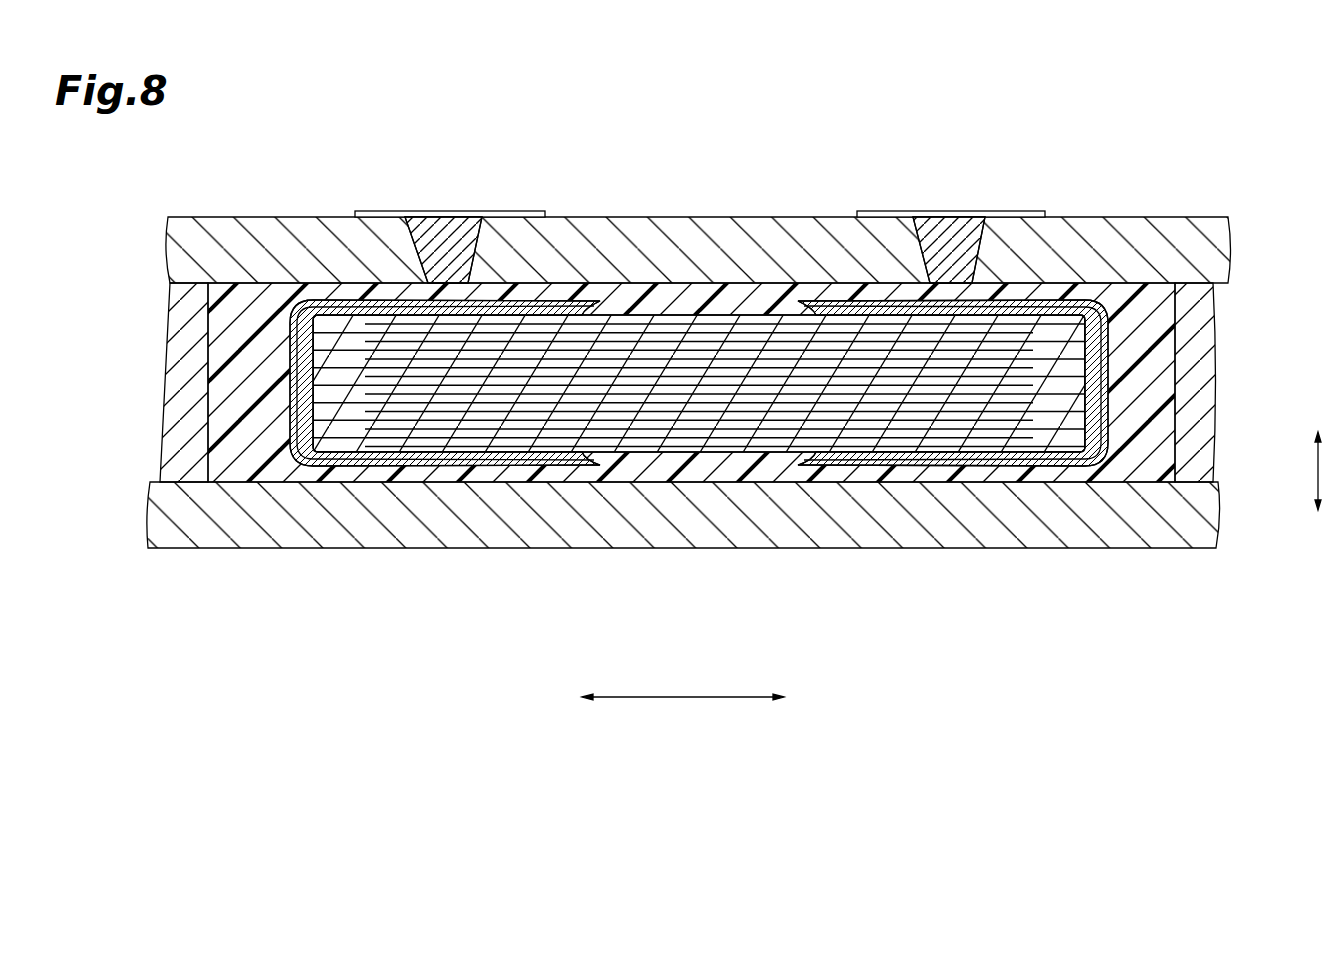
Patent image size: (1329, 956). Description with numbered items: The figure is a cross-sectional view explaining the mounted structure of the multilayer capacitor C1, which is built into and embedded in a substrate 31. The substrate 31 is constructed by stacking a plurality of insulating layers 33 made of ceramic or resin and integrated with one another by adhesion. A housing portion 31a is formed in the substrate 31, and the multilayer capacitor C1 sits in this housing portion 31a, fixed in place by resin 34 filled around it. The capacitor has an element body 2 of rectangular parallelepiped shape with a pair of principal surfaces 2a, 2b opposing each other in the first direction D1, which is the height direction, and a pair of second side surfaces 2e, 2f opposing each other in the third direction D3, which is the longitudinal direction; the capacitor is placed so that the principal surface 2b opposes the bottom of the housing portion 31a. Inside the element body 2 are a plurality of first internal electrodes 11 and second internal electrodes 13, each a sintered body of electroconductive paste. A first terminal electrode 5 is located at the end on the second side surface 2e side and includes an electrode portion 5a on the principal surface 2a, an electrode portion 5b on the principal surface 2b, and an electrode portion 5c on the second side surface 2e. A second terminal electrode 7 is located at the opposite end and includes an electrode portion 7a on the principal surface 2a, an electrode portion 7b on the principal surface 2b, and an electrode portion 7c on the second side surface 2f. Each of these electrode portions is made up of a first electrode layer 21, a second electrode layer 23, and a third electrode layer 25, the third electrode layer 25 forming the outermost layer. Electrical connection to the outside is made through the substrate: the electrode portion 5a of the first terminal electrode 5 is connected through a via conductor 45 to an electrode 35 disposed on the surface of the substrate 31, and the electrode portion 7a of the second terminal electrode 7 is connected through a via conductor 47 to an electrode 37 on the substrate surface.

The element body 2 is at (775, 446).
The principal surface 2a is at (729, 315).
The principal surface 2b is at (526, 454).
The second side surface 2e is at (310, 390).
The second side surface 2f is at (1110, 376).
The first terminal electrode 5 is at (465, 168).
The electrode portion 5a is at (600, 300).
The electrode portion 5b is at (408, 467).
The electrode portion 5c is at (292, 404).
The second terminal electrode 7 is at (1075, 166).
The electrode portion 7a is at (1096, 303).
The electrode portion 7b is at (938, 467).
The electrode portion 7c is at (1110, 393).
The first internal electrodes 11 is at (674, 292).
The second internal electrodes 13 is at (742, 292).
The first electrode layer 21 is at (432, 312).
The second electrode layer 23 is at (398, 306).
The third electrode layer 25 is at (364, 300).
The substrate 31 is at (1180, 212).
The housing portion 31a is at (290, 472).
The insulating layers 33 is at (178, 258).
The resin 34 is at (1133, 470).
The electrode 35 is at (495, 210).
The electrode 37 is at (948, 210).
The via conductor 45 is at (452, 258).
The via conductor 47 is at (913, 252).
The multilayer capacitor C1 is at (1118, 321).
The first direction D1 is at (1316, 480).
The third direction D3 is at (670, 698).